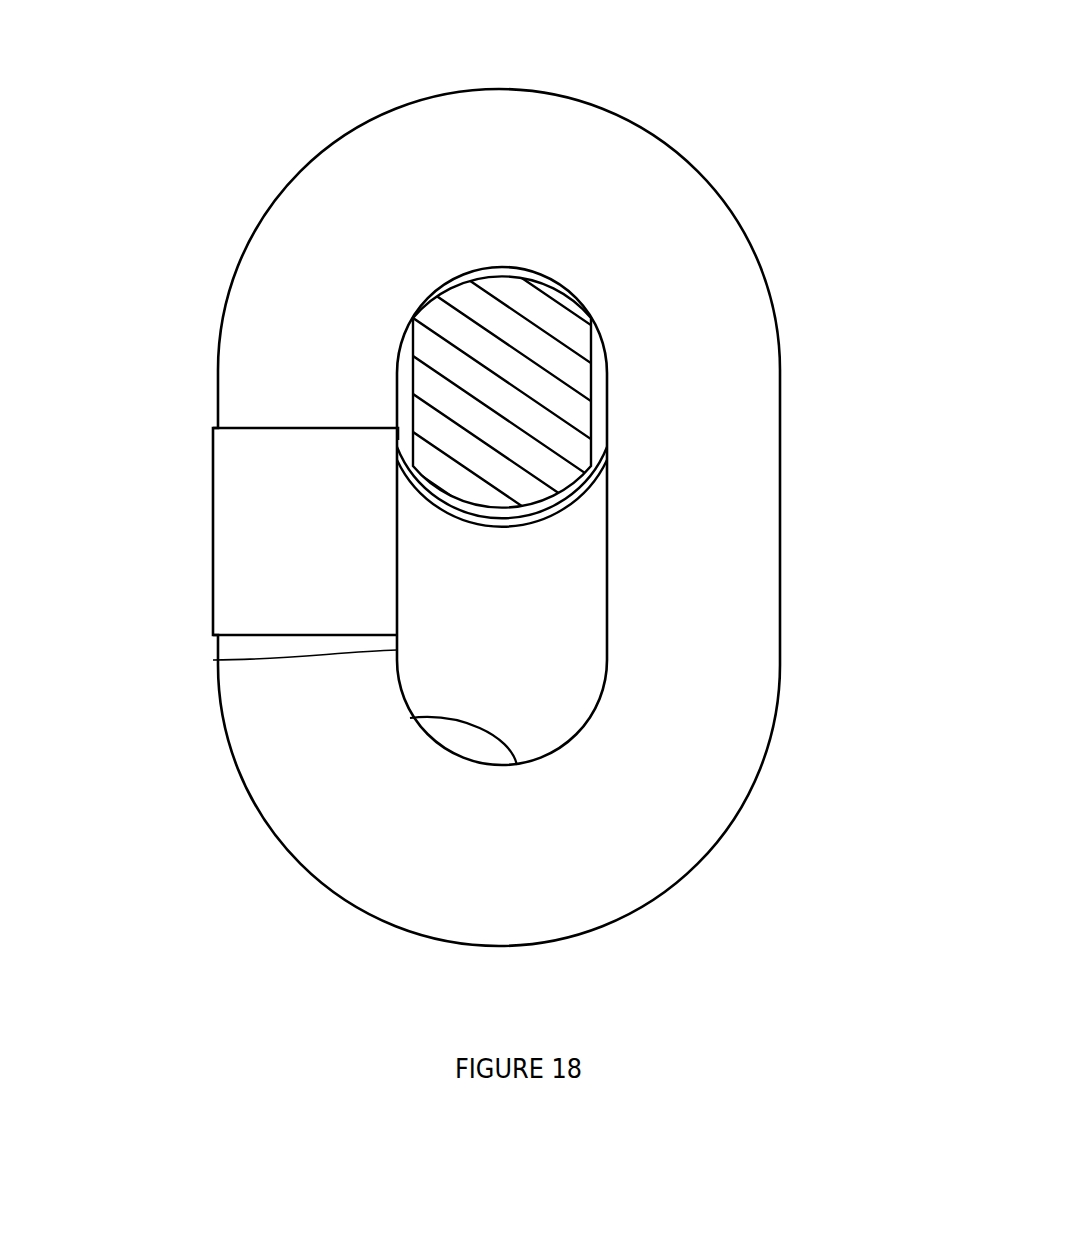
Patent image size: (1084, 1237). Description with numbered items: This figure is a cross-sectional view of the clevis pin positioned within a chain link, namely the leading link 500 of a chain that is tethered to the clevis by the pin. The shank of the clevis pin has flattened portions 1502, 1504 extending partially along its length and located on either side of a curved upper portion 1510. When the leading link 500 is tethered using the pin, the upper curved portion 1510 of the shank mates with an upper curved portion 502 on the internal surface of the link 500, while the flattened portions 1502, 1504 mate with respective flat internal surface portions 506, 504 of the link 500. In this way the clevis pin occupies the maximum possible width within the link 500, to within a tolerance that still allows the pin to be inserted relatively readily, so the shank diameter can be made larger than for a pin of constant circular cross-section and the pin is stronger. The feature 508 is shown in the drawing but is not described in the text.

The leading link 500 is at (632, 147).
The upper curved portion 502 is at (503, 267).
The flat internal surface portion 504 is at (610, 553).
The flat internal surface portion 506 is at (213, 660).
The lip 508 is at (410, 718).
The flattened portion 1502 is at (397, 387).
The flattened portion 1504 is at (610, 415).
The curved upper portion 1510 is at (520, 267).